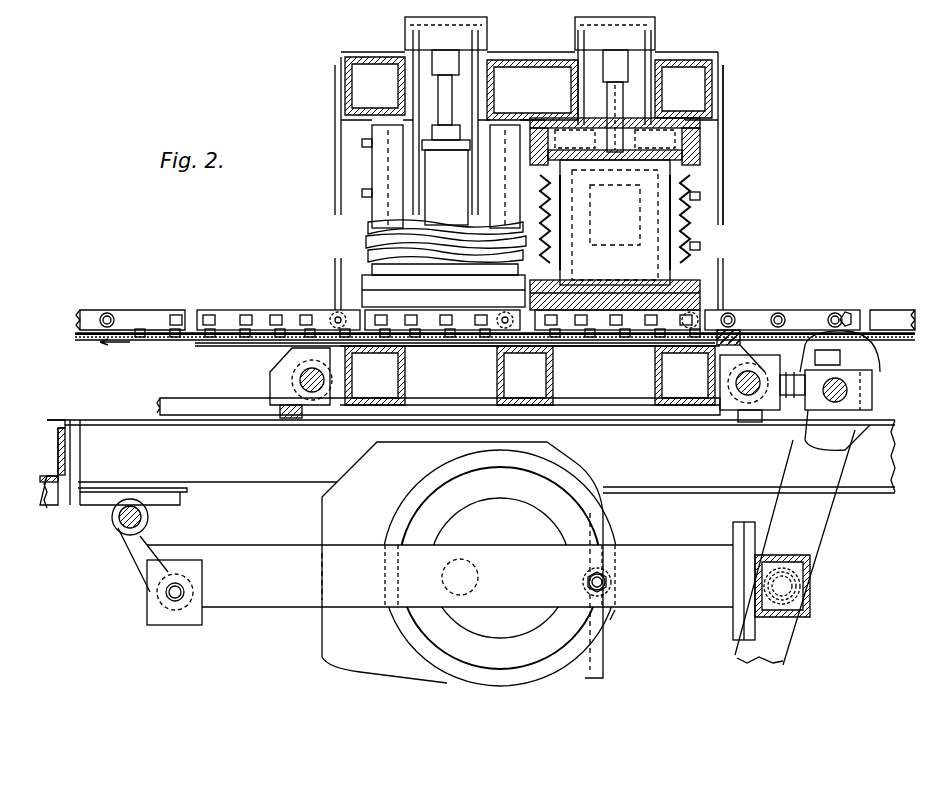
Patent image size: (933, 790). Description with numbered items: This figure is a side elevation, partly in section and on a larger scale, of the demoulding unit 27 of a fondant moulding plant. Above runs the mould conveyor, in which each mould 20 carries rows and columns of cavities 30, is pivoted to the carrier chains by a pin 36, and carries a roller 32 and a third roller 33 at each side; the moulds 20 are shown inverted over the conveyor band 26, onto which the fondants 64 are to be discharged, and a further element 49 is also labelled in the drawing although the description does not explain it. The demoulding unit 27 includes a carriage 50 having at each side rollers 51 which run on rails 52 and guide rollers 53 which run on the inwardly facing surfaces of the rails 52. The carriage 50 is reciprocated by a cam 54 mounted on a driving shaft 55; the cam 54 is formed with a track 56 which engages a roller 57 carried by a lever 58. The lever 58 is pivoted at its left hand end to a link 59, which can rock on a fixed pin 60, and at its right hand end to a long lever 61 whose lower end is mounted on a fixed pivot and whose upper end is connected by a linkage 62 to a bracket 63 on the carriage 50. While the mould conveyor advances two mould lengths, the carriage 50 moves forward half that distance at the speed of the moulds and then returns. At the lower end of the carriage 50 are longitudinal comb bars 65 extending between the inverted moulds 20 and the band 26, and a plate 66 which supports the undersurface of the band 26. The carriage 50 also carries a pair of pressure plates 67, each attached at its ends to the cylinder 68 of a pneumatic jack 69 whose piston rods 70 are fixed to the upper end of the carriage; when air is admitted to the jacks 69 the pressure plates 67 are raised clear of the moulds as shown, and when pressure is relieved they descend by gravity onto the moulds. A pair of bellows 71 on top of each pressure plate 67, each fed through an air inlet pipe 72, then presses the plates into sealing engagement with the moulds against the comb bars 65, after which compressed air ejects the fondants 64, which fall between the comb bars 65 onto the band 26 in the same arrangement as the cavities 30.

The mould 20 is at (205, 311).
The conveyor band 26 is at (608, 337).
The demoulding unit 27 is at (732, 60).
The cavities 30 is at (172, 312).
The roller 32 is at (841, 314).
The third roller 33 is at (108, 312).
The pin 36 is at (731, 313).
The guide rail 49 is at (230, 335).
The carriage 50 is at (723, 136).
The rollers 51 is at (283, 378).
The rails 52 is at (192, 405).
The guide rollers 53 is at (280, 408).
The cam 54 is at (400, 632).
The driving shaft 55 is at (478, 572).
The track 56 is at (606, 620).
The roller 57 is at (594, 569).
The lever 58 is at (224, 545).
The link 59 is at (125, 553).
The fixed pin 60 is at (140, 518).
The long lever 61 is at (828, 522).
The linkage 62 is at (872, 396).
The bracket 63 is at (745, 345).
The fondants 64 is at (143, 337).
The comb bars 65 is at (290, 318).
The plate 66 is at (205, 338).
The pressure plates 67 is at (362, 300).
The cylinder 68 is at (452, 189).
The pneumatic jack 69 is at (465, 136).
The piston rods 70 is at (448, 80).
The bellows 71 is at (382, 230).
The air inlet pipe 72 is at (612, 96).